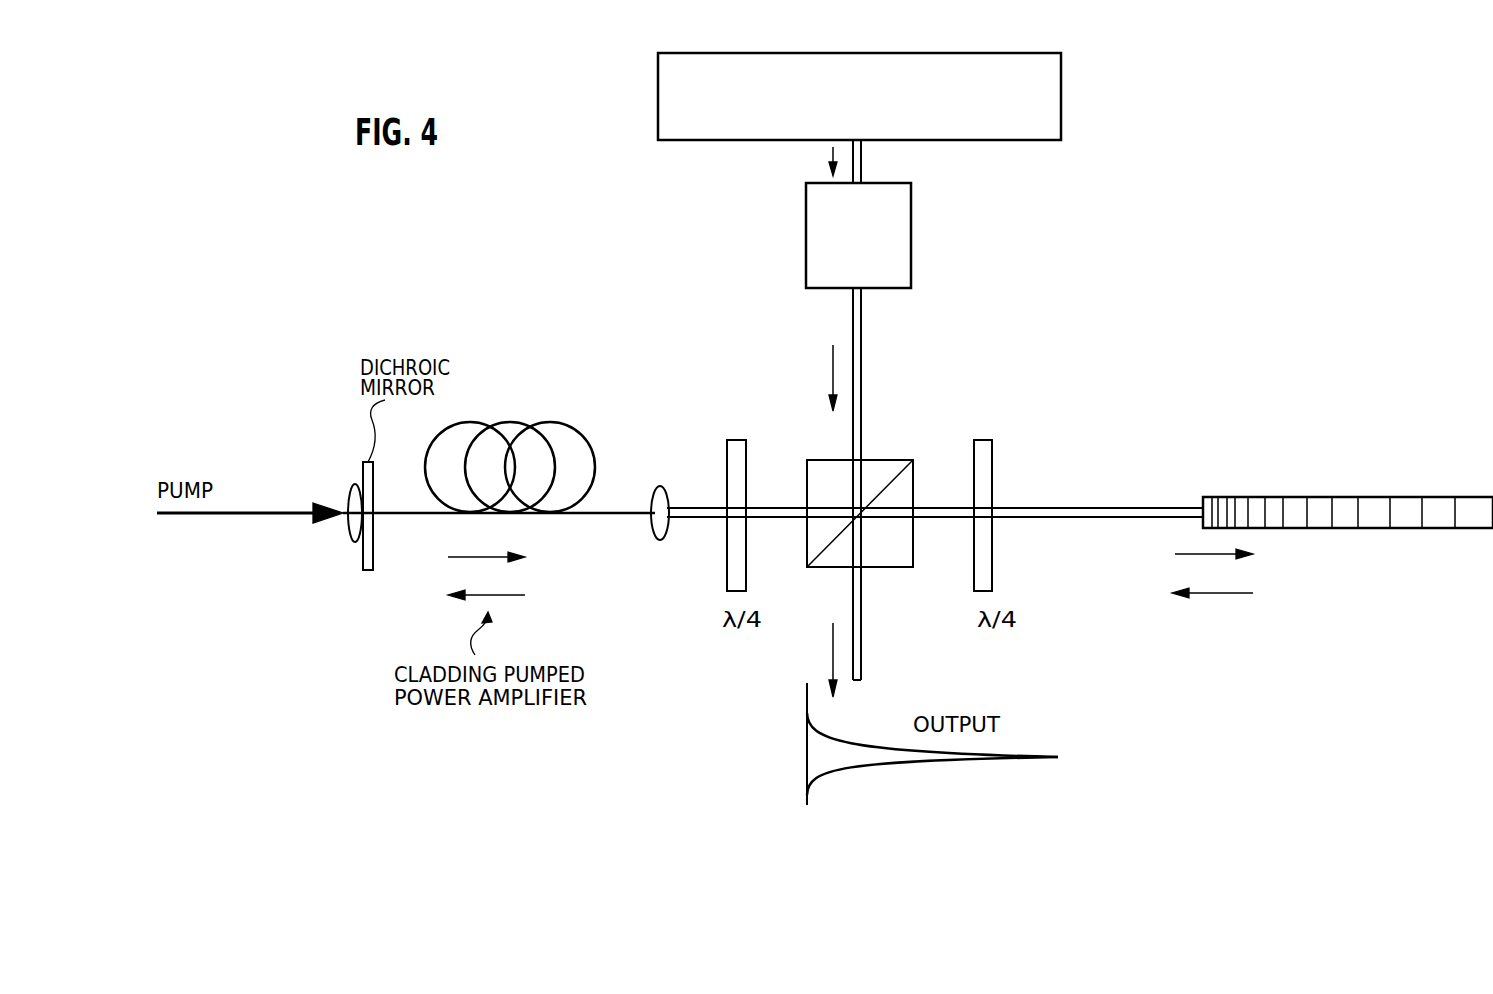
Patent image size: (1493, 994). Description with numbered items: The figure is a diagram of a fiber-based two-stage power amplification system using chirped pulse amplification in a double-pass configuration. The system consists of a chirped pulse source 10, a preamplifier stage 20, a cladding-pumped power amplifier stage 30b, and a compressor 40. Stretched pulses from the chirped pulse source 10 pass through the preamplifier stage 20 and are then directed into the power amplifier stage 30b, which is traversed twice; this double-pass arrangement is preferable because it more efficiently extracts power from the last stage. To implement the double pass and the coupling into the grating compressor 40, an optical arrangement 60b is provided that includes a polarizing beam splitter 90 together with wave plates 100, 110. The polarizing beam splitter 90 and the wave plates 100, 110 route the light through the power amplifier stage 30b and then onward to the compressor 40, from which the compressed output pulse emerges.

The chirped pulse source 10 is at (1052, 100).
The preamplifier stage 20 is at (900, 247).
The power amplifier stage 30b is at (527, 407).
The compressor 40 is at (1232, 488).
The optical arrangement 60b is at (890, 423).
The polarizing beam splitter 90 is at (902, 558).
The wave plate 100 is at (735, 445).
The wave plate 110 is at (985, 440).